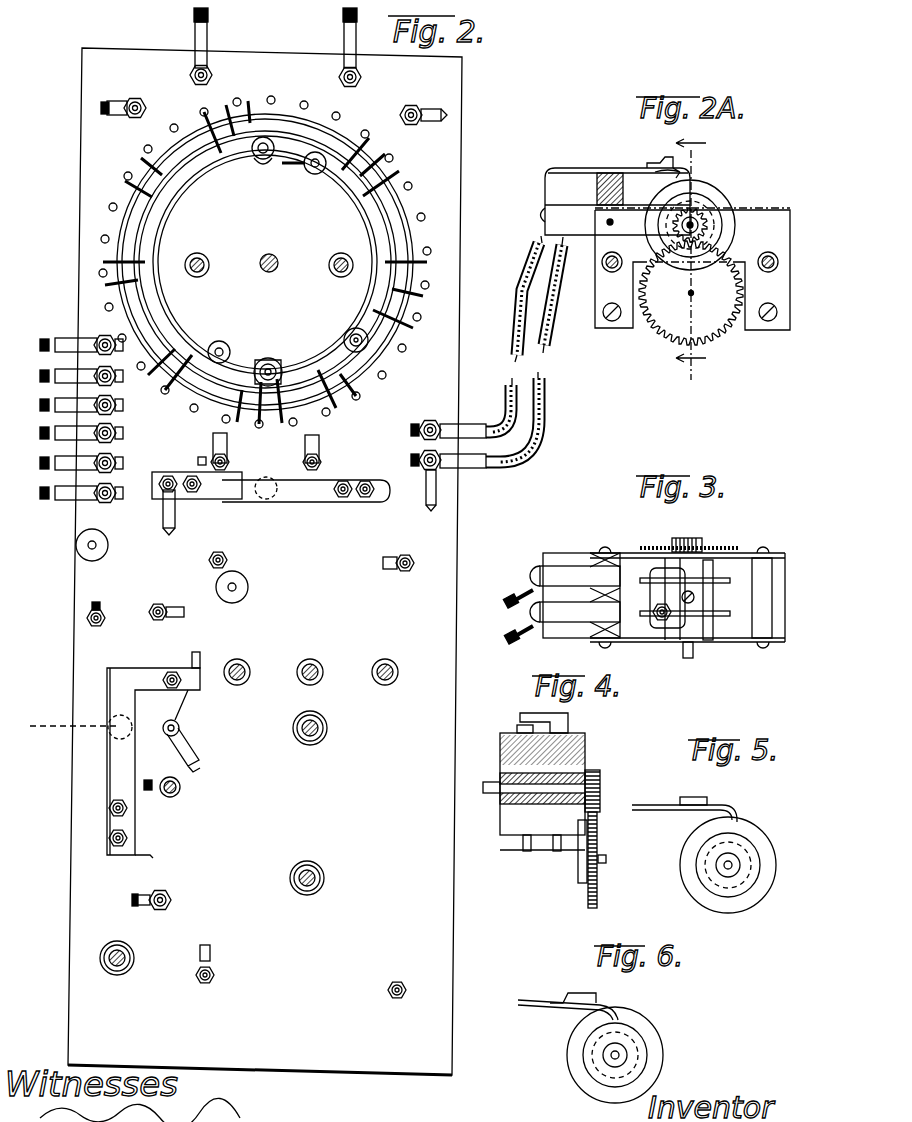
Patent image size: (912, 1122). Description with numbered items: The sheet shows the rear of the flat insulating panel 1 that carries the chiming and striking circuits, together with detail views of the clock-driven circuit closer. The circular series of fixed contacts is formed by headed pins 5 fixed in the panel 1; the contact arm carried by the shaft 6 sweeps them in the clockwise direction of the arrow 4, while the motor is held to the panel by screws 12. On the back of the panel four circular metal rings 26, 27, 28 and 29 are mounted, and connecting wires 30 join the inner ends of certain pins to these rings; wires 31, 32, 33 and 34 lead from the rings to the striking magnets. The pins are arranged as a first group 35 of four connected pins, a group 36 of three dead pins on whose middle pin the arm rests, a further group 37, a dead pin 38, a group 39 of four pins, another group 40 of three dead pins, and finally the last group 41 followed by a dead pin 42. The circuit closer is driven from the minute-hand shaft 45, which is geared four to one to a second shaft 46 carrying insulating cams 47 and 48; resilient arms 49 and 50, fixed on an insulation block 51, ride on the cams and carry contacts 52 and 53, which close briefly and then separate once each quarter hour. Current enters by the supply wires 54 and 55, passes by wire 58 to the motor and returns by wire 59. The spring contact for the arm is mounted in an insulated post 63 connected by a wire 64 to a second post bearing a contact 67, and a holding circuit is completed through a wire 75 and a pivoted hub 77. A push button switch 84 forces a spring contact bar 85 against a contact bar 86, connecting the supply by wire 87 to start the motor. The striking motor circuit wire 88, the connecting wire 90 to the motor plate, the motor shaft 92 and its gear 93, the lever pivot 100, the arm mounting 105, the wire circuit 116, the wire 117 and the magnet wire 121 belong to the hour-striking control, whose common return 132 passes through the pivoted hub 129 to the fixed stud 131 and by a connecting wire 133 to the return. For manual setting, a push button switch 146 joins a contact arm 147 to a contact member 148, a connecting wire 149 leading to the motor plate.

In FIG. 2, the panel 1 is at (471, 189).
In FIG. 2A, the arrow 4 is at (691, 251).
In FIG. 2, the headed pins 5 is at (277, 98).
In FIG. 2, the shaft 6 is at (270, 254).
In FIG. 2, the screws 12 is at (269, 276).
In FIG. 2, the outer circuit wire 26 is at (418, 197).
In FIG. 2, the circuit wire 27 is at (408, 175).
In FIG. 2, the circuit wire 28 is at (352, 218).
In FIG. 2, the inner circuit wire 29 is at (336, 206).
In FIG. 2, the connecting wires 30 is at (357, 122).
In FIG. 2, the wire 31 is at (118, 378).
In FIG. 2, the wire 32 is at (118, 405).
In FIG. 2, the wire 33 is at (118, 433).
In FIG. 2, the wire 34 is at (109, 307).
In FIG. 2, the first group of pins 35 is at (271, 100).
In FIG. 2, the group of three pins 36 is at (186, 128).
In FIG. 2, the group of pins 37 is at (128, 176).
In FIG. 2, the dead pin 38 is at (113, 207).
In FIG. 2, the group of four pins 39 is at (103, 273).
In FIG. 2, the group of three dead pins 40 is at (112, 322).
In FIG. 2, the last group of pins 41 is at (368, 134).
In FIG. 2, the dead pin 42 is at (336, 114).
In FIG. 2A, the shaft 45 is at (691, 293).
In FIG. 4, the shaft 45 is at (602, 858).
In FIG. 2A, the second shaft 46 is at (700, 222).
In FIG. 3, the second shaft 46 is at (688, 660).
In FIG. 4, the second shaft 46 is at (484, 792).
In FIG. 5, the second shaft 46 is at (728, 865).
In FIG. 6, the second shaft 46 is at (616, 1055).
In FIG. 3, the cam 47 is at (728, 580).
In FIG. 4, the cam 47 is at (586, 752).
In FIG. 2A, the cam 48 is at (708, 192).
In FIG. 3, the cam 48 is at (727, 617).
In FIG. 4, the cam 48 is at (500, 752).
In FIG. 5, the cam 48 is at (758, 833).
In FIG. 6, the cam 48 is at (568, 1040).
In FIG. 3, the resilient arm 49 is at (590, 568).
In FIG. 4, the resilient arm 49 is at (560, 745).
In FIG. 5, the resilient arm 49 is at (705, 812).
In FIG. 2A, the resilient arm 50 is at (612, 168).
In FIG. 3, the resilient arm 50 is at (590, 600).
In FIG. 4, the resilient arm 50 is at (500, 740).
In FIG. 5, the resilient arm 50 is at (672, 808).
In FIG. 6, the resilient arm 50 is at (540, 1000).
In FIG. 2A, the insulation block 51 is at (587, 238).
In FIG. 3, the insulation block 51 is at (556, 552).
In FIG. 4, the insulation block 51 is at (500, 772).
In FIG. 2A, the electrical contact 52 is at (673, 160).
In FIG. 4, the electrical contact 52 is at (525, 714).
In FIG. 5, the electrical contact 52 is at (704, 797).
In FIG. 6, the electrical contact 52 is at (598, 992).
In FIG. 2A, the electrical contact 53 is at (688, 170).
In FIG. 4, the electrical contact 53 is at (517, 728).
In FIG. 5, the electrical contact 53 is at (712, 814).
In FIG. 6, the electrical contact 53 is at (606, 1004).
In FIG. 2, the supply wire 54 is at (344, 32).
In FIG. 2A, the supply wire 54 is at (512, 360).
In FIG. 2, the supply wire 55 is at (206, 18).
In FIG. 2, the wire 58 is at (222, 432).
In FIG. 2A, the wire 58 is at (543, 354).
In FIG. 2, the wire 59 is at (112, 100).
In FIG. 2, the insulated post 63 is at (344, 343).
In FIG. 2, the wire 64 is at (256, 162).
In FIG. 2, the contact 67 is at (148, 792).
In FIG. 2, the wire 75 is at (270, 357).
In FIG. 2, the hub 77 is at (222, 341).
In FIG. 2, the push button switch 84 is at (270, 502).
In FIG. 2, the spring contact bar 85 is at (182, 470).
In FIG. 2, the contact bar 86 is at (330, 500).
In FIG. 2, the wire 87 is at (410, 430).
In FIG. 2, the motor circuit wire 88 is at (196, 768).
In FIG. 2, the connecting wire 90 is at (382, 563).
In FIG. 2, the shaft 92 is at (314, 666).
In FIG. 2, the gear 93 is at (320, 106).
In FIG. 2, the pivot 100 is at (249, 588).
In FIG. 2, the mounting 105 is at (76, 548).
In FIG. 2, the wire circuit 116 is at (195, 652).
In FIG. 2, the wire 117 is at (182, 608).
In FIG. 2, the wire 121 is at (110, 500).
In FIG. 2, the pivoted hub 129 is at (168, 893).
In FIG. 2, the fixed stud 131 is at (181, 788).
In FIG. 2, the common return 132 is at (97, 335).
In FIG. 2, the connecting wire 133 is at (152, 774).
In FIG. 2, the push button switch 146 is at (77, 727).
In FIG. 2, the contact arm 147 is at (108, 770).
In FIG. 2, the contact member 148 is at (145, 668).
In FIG. 2, the connecting wire 149 is at (150, 857).